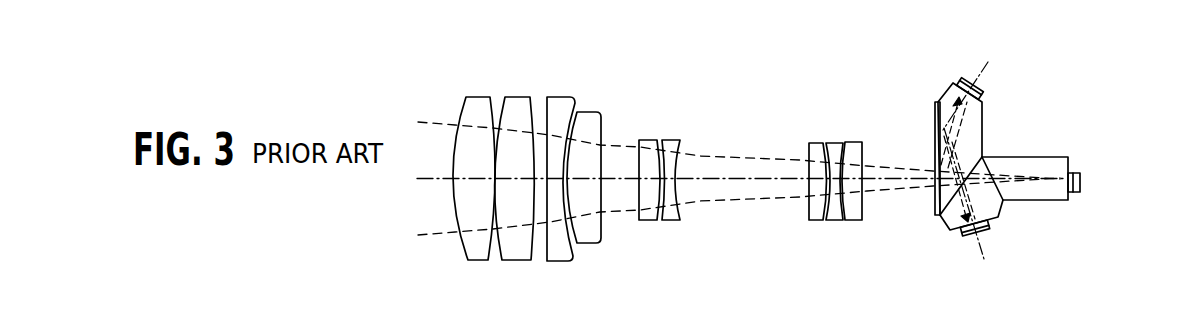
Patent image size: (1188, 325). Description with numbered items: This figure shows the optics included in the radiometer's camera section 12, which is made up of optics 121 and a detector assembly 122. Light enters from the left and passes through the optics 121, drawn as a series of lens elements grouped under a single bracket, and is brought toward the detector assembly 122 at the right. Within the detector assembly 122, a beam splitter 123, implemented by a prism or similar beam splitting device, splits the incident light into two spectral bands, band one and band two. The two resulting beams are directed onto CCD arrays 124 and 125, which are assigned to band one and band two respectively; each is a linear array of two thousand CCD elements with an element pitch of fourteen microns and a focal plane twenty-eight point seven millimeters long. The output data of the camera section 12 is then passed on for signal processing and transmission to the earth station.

The camera section 12 is at (798, 28).
The optics 121 is at (880, 84).
The detector assembly 122 is at (1085, 274).
The beam splitter 123 is at (984, 128).
The CCD array 124 is at (1080, 171).
The CCD array 125 is at (985, 233).